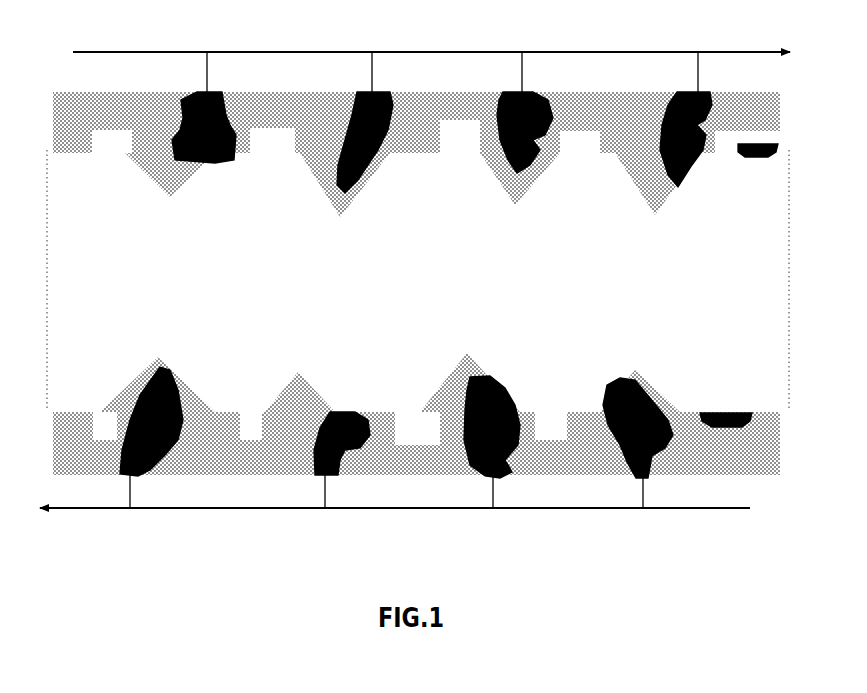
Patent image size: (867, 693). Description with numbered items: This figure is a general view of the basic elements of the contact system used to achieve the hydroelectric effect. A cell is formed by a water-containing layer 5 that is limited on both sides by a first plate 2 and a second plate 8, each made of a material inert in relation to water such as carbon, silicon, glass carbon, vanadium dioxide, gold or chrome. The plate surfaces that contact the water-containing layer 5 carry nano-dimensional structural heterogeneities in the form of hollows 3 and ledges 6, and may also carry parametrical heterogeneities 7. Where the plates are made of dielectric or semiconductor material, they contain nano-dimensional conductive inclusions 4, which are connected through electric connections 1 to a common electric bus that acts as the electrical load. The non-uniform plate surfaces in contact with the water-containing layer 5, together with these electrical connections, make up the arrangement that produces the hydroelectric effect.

The electric connections to a common electric bus 1 is at (410, 48).
The first plate 2 is at (461, 90).
The hollows 3 is at (278, 143).
The conductive inclusions 4 is at (462, 383).
The water-containing layer 5 is at (500, 320).
The ledges 6 is at (482, 354).
The parametrical heterogeneities 7 is at (752, 159).
The second plate 8 is at (447, 477).